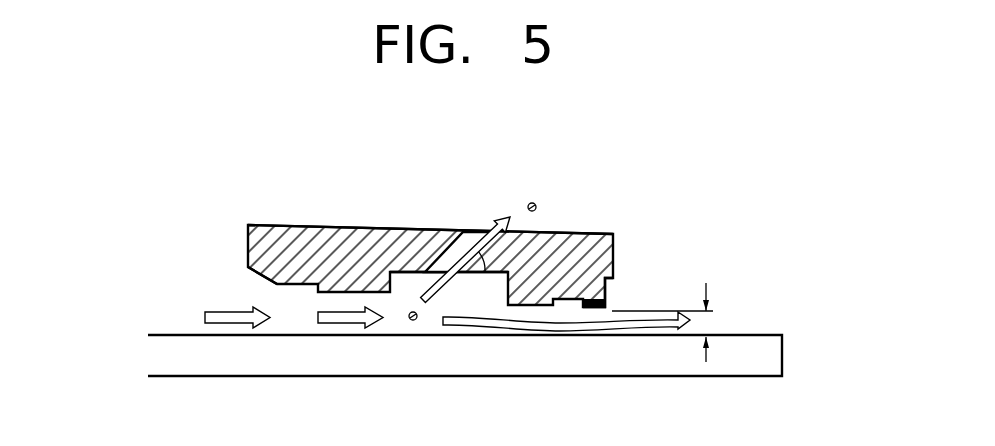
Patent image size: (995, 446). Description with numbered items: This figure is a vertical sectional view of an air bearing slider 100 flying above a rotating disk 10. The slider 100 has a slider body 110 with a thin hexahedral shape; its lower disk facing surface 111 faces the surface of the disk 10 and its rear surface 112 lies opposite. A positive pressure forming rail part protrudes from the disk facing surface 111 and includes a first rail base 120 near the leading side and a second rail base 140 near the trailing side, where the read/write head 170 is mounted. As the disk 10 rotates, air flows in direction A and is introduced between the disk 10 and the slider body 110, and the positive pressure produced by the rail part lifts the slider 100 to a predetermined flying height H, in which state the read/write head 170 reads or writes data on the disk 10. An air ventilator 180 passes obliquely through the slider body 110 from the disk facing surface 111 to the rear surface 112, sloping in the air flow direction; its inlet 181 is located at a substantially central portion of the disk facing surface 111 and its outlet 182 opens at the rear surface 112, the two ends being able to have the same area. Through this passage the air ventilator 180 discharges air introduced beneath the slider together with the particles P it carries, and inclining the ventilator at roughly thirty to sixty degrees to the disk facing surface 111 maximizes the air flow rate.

The disk 10 is at (782, 358).
The air bearing slider 100 is at (233, 203).
The slider body 110 is at (590, 253).
The disk facing surface 111 is at (482, 273).
The rear surface 112 is at (337, 225).
The first rail base 120 is at (263, 275).
The second rail base 140 is at (595, 293).
The read/write head 170 is at (593, 308).
The air ventilator 180 is at (452, 230).
The inlet 181 is at (453, 272).
The outlet 182 is at (515, 226).
The air flow direction A is at (233, 318).
The particles P is at (532, 203).
The flying height H is at (674, 322).